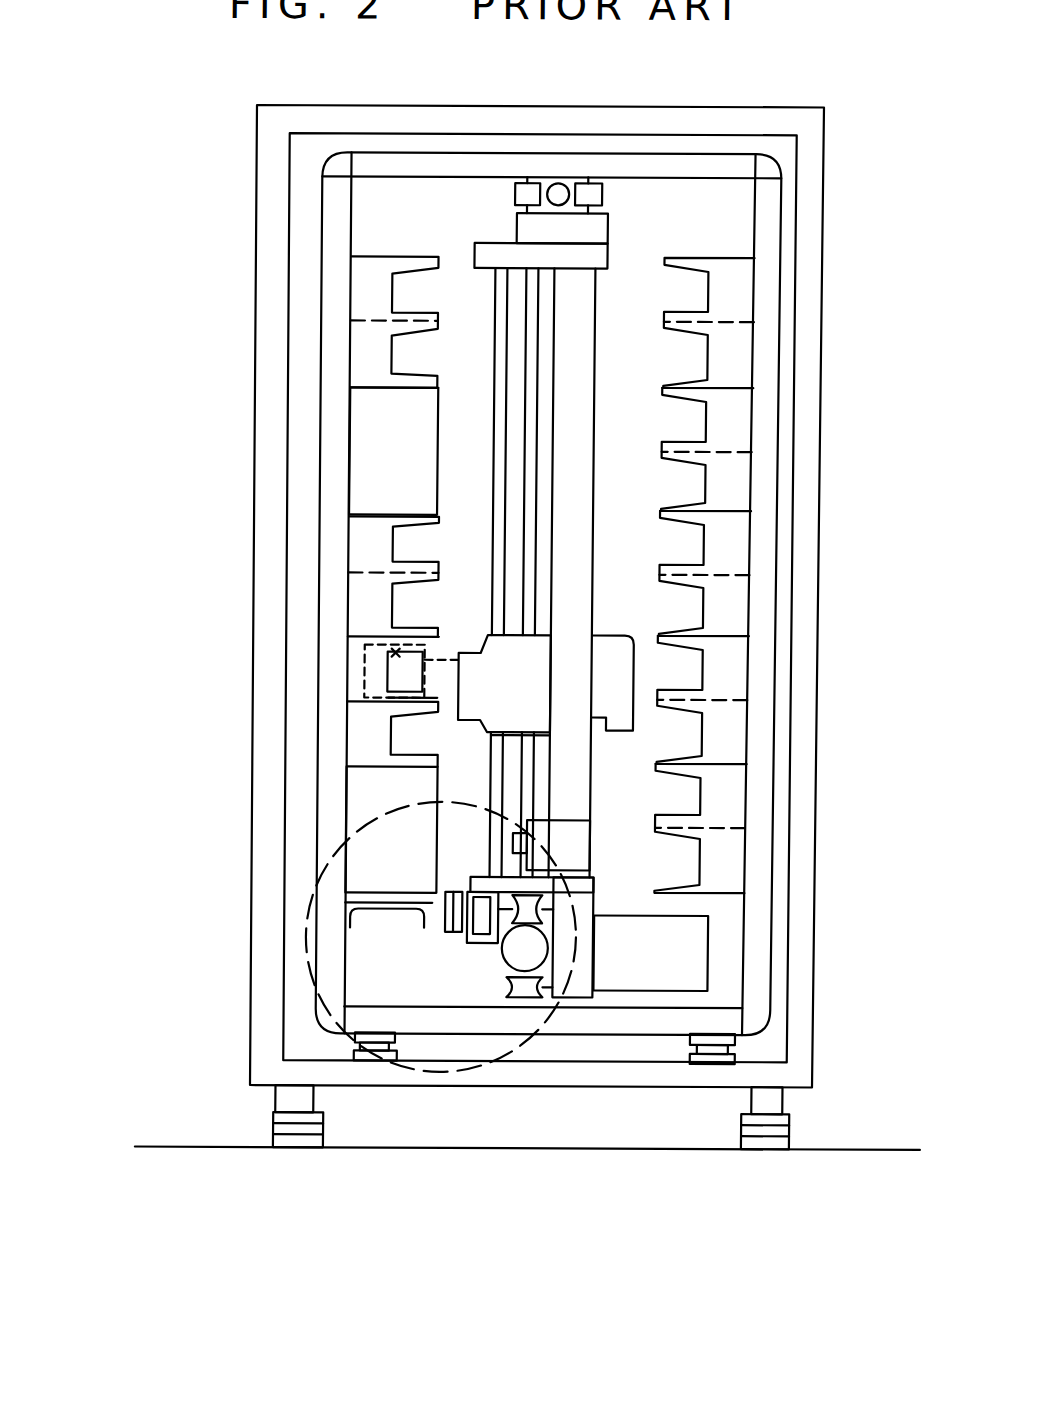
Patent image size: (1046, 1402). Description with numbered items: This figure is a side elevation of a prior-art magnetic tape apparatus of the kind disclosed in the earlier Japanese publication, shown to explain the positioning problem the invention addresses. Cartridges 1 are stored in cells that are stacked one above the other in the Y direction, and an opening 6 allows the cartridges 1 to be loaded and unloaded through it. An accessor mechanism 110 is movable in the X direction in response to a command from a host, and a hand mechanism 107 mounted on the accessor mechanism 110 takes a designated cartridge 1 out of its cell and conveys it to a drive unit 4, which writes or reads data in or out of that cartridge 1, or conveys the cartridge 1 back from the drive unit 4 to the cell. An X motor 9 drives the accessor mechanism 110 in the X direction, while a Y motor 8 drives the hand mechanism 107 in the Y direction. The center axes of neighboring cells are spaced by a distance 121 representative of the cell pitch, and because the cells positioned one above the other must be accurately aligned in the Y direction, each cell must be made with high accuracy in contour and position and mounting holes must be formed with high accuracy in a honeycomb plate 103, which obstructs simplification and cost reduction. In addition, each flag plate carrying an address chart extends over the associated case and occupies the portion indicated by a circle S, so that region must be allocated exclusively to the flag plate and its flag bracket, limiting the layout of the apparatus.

The cartridge 1 is at (378, 675).
The drive unit 4 is at (370, 872).
The opening 6 is at (380, 408).
The Y motor 8 is at (581, 848).
The X motor 9 is at (709, 951).
The honeycomb plate 103 is at (344, 525).
The hand mechanism 107 is at (488, 705).
The accessor mechanism 110 is at (599, 1006).
The distance 121 is at (360, 660).
The circle S is at (416, 1064).